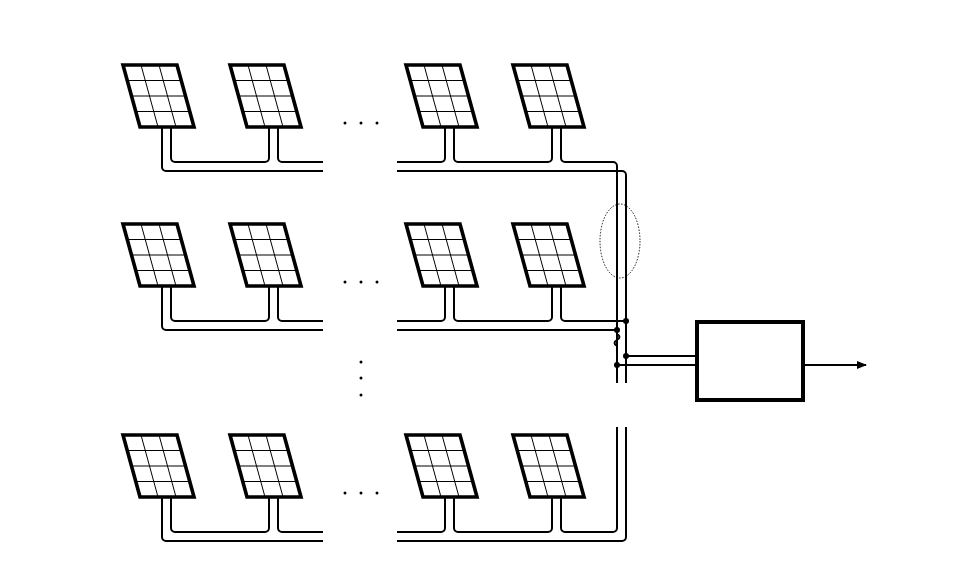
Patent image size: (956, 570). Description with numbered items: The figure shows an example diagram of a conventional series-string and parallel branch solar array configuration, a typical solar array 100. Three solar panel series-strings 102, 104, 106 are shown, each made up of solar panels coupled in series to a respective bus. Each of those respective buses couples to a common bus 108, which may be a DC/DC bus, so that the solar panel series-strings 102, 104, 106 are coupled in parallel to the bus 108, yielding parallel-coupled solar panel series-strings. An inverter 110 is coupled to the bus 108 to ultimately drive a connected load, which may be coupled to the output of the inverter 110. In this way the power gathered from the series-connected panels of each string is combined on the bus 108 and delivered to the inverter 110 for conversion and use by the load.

The solar array 100 is at (646, 80).
The solar panel series-string 102 is at (108, 82).
The solar panel series-string 104 is at (108, 252).
The solar panel series-string 106 is at (108, 468).
The bus 108 is at (641, 237).
The inverter 110 is at (793, 396).